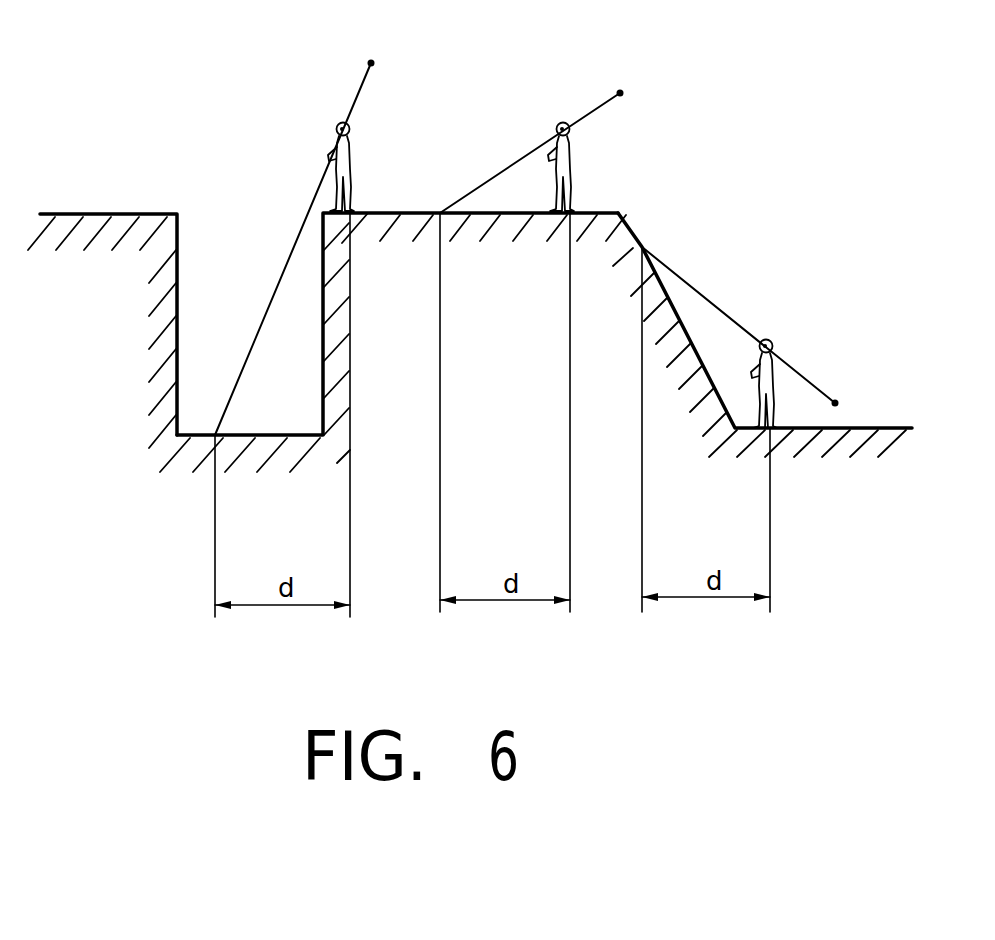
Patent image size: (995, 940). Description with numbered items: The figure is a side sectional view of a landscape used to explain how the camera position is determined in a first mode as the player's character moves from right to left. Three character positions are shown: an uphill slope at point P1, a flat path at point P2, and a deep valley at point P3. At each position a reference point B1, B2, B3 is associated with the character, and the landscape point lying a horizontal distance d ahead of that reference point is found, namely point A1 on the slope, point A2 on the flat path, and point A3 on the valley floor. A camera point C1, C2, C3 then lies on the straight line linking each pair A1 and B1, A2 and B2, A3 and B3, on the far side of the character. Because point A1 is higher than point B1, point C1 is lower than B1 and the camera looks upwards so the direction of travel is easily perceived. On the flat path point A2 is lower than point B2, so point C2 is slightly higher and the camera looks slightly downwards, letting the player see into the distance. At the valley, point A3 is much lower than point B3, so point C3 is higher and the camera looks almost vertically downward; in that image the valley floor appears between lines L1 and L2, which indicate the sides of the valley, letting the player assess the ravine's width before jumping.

The line indicating side of valley L1 is at (176, 213).
The line indicating side of valley L2 is at (322, 212).
The landscape point at distance d from B1 A1 is at (642, 247).
The landscape point at distance d from B2 A2 is at (438, 211).
The landscape point on valley floor A3 is at (215, 435).
The reference point of character at P1 B1 is at (766, 341).
The reference point of character at P2 B2 is at (562, 122).
The reference point of character at P3 B3 is at (337, 126).
The camera point on line through A1 and B1 C1 is at (836, 404).
The camera point on line through A2 and B2 C2 is at (638, 75).
The camera point on line through A3 and B3 C3 is at (383, 44).
The point on uphill slope P1 is at (778, 427).
The point on flat path P2 is at (574, 210).
The point at deep valley P3 is at (353, 207).